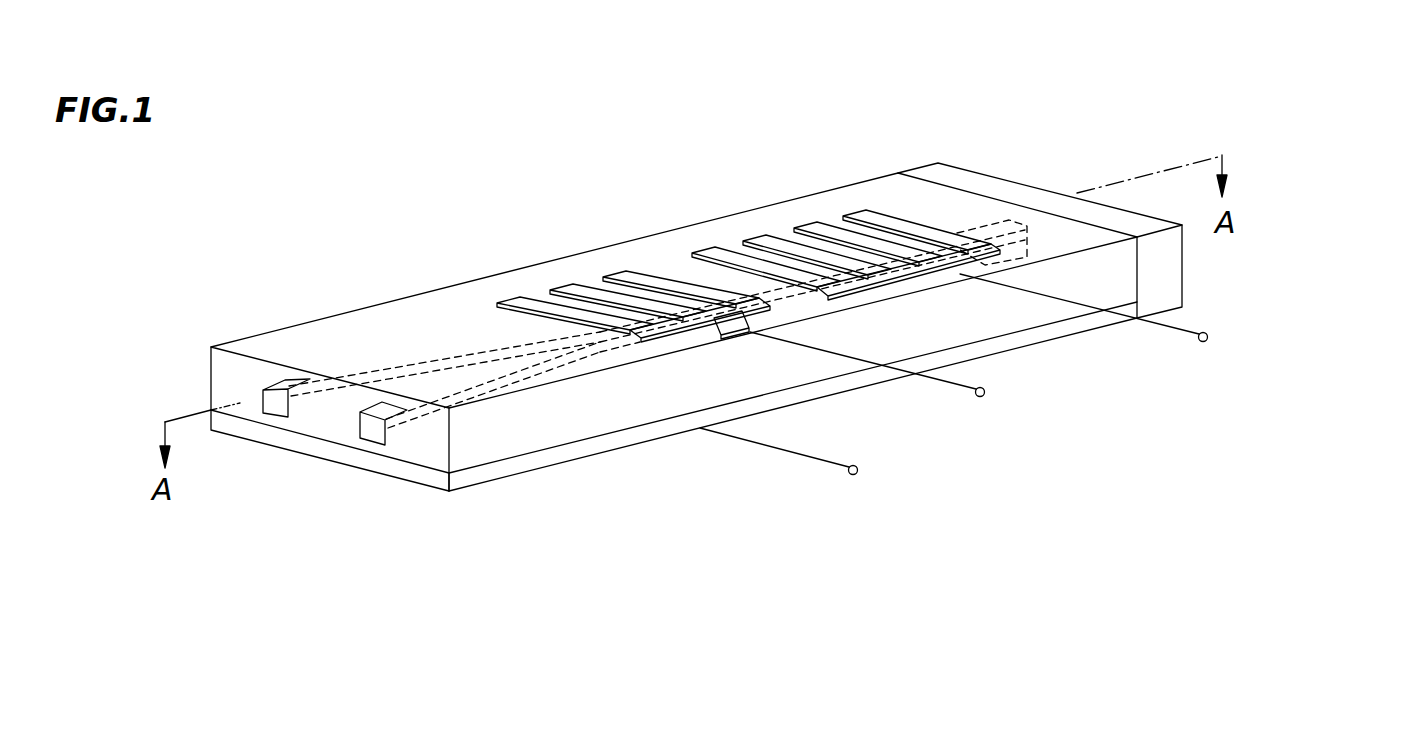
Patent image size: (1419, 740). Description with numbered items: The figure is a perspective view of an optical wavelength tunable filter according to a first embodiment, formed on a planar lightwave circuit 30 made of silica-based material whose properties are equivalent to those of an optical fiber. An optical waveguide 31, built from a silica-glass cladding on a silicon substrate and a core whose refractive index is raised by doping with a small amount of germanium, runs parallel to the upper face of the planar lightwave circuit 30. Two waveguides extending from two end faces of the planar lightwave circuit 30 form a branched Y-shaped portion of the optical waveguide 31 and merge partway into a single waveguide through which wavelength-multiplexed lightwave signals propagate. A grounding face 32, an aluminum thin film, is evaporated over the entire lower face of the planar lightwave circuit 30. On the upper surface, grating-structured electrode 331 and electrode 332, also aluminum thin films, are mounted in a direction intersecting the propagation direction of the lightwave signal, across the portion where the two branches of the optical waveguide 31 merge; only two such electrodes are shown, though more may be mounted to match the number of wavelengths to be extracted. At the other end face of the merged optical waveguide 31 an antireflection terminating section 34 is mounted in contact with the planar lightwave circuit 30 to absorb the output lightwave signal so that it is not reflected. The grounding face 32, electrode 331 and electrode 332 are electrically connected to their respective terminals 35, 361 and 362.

The planar lightwave circuit 30 is at (447, 312).
The optical waveguide 31 is at (392, 367).
The grounding face 32 is at (500, 450).
The grating-structured electrode 331 is at (565, 287).
The grating-structured electrode 332 is at (757, 235).
The antireflection terminating section 34 is at (930, 175).
The terminal 35 is at (857, 474).
The terminal 361 is at (984, 396).
The terminal 362 is at (1207, 341).